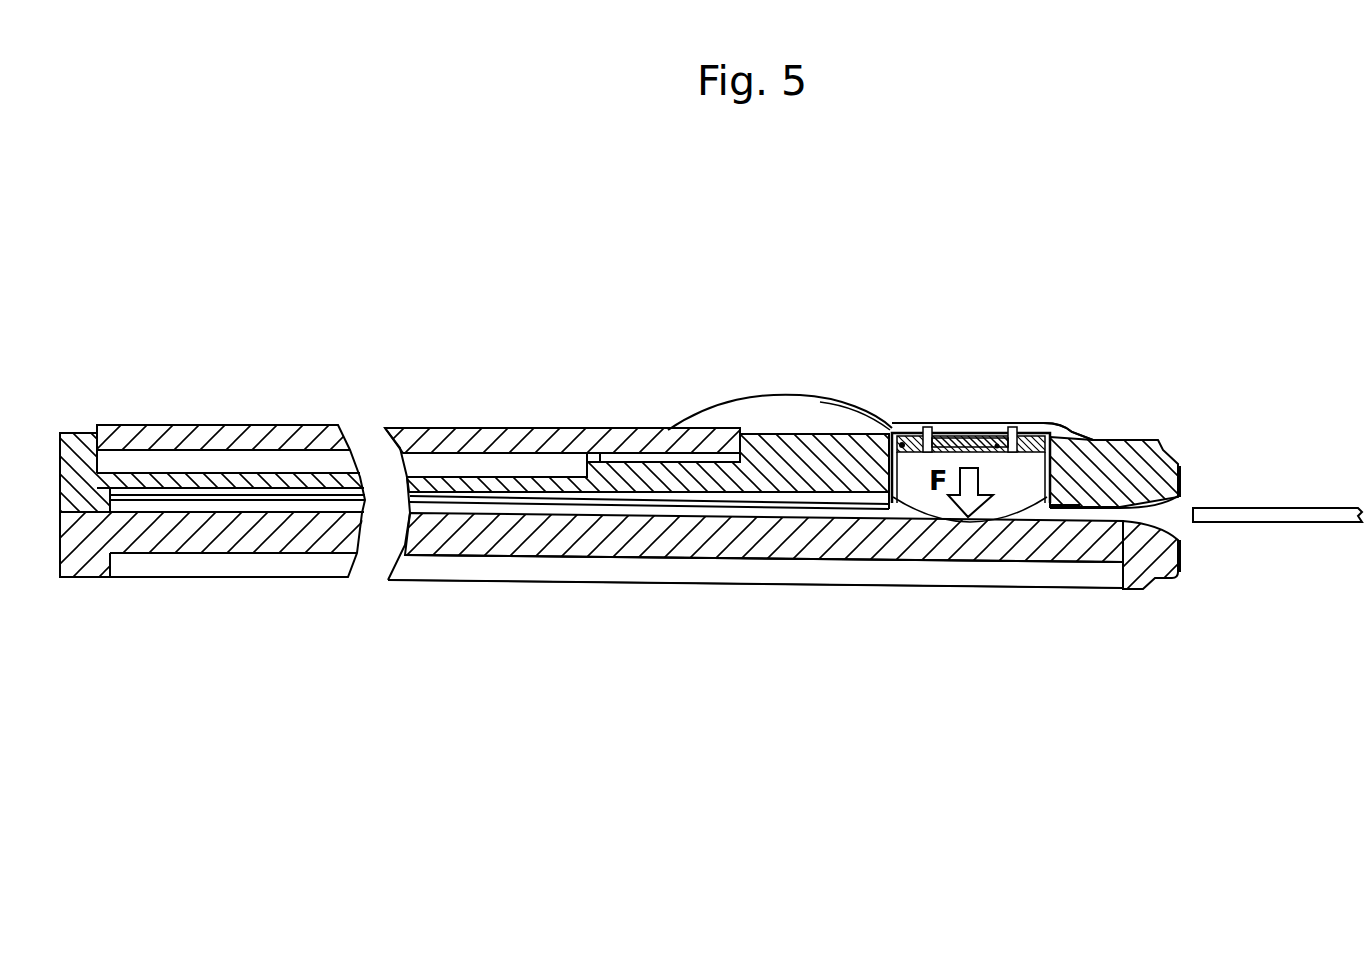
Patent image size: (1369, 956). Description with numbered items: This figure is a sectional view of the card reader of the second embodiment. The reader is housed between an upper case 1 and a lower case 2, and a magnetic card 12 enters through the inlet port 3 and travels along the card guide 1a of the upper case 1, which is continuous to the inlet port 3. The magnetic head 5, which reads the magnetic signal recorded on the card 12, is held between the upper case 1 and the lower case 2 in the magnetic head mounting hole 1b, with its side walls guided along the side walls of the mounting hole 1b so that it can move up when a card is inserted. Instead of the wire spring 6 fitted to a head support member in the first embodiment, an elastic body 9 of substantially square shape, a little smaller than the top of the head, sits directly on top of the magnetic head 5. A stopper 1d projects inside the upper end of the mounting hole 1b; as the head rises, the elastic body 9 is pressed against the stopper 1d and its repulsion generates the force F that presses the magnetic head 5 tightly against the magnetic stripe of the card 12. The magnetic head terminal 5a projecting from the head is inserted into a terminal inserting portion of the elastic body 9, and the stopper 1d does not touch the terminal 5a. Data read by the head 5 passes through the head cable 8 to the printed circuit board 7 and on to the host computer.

The upper case 1 is at (1153, 463).
The card guide 1a is at (830, 511).
The magnetic head mounting hole 1b is at (860, 430).
The stopper 1d is at (1057, 428).
The lower case 2 is at (1010, 557).
The inlet port 3 is at (1167, 517).
The magnetic head 5 is at (1030, 470).
The magnetic head terminal 5a is at (929, 430).
The wire spring 6 is at (796, 461).
The printed circuit board 7 is at (430, 428).
The head cable 8 is at (676, 429).
The elastic body 9 is at (916, 430).
The magnetic card 12 is at (1260, 516).